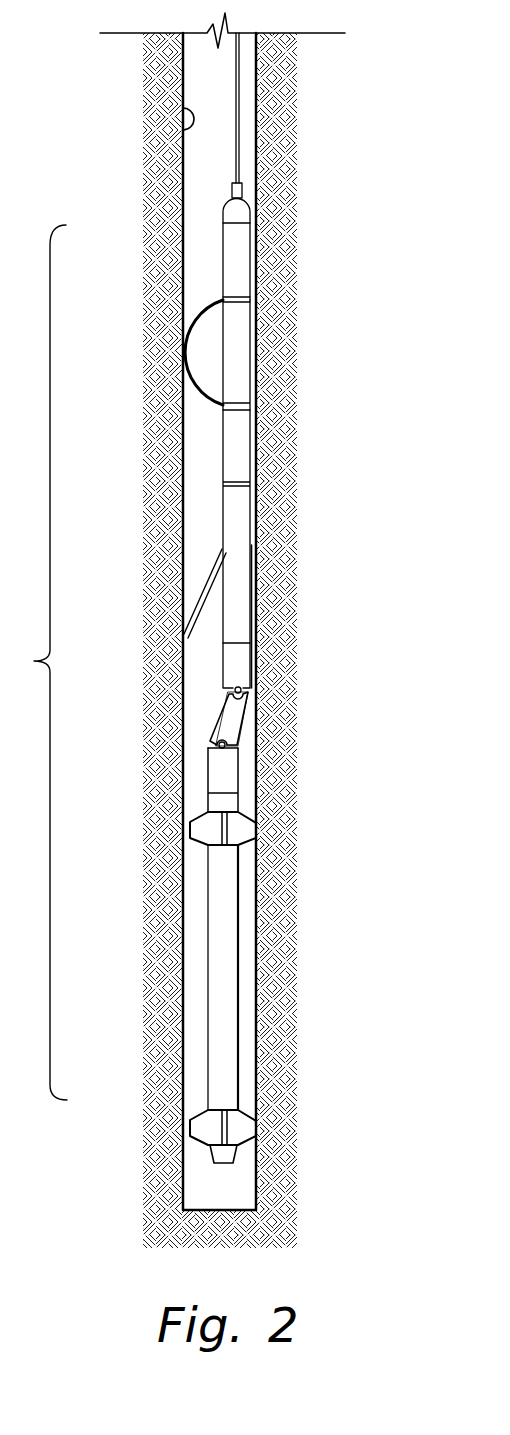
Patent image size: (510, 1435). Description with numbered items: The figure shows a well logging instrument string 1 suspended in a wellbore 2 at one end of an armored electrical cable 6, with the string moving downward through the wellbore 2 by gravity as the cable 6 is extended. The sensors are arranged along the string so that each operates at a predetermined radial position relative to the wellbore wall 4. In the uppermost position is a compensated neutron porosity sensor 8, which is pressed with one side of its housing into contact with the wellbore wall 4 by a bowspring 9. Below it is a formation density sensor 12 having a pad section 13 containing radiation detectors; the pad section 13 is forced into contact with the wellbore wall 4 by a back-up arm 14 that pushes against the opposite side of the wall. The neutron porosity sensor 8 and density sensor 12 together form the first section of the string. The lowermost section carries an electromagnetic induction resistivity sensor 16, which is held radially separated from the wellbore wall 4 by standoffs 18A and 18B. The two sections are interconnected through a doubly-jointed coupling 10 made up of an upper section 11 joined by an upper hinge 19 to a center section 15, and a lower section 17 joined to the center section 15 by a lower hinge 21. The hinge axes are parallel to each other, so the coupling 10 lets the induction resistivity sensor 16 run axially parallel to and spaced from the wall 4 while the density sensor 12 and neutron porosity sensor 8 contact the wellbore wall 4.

The well logging instrument string 1 is at (34, 661).
The wellbore 2 is at (200, 172).
The wellbore wall 4 is at (180, 114).
The armored electrical cable 6 is at (233, 88).
The compensated neutron porosity sensor 8 is at (235, 252).
The bowspring 9 is at (200, 312).
The coupling 10 is at (257, 737).
The upper section 11 is at (233, 670).
The formation density sensor 12 is at (237, 518).
The pad section 13 is at (256, 585).
The back-up arm 14 is at (200, 583).
The center section 15 is at (227, 718).
The electromagnetic induction resistivity sensor 16 is at (238, 996).
The lower section 17 is at (222, 772).
The standoff 18A is at (256, 832).
The standoff 18B is at (256, 1126).
The upper hinge 19 is at (232, 695).
The lower hinge 21 is at (220, 745).